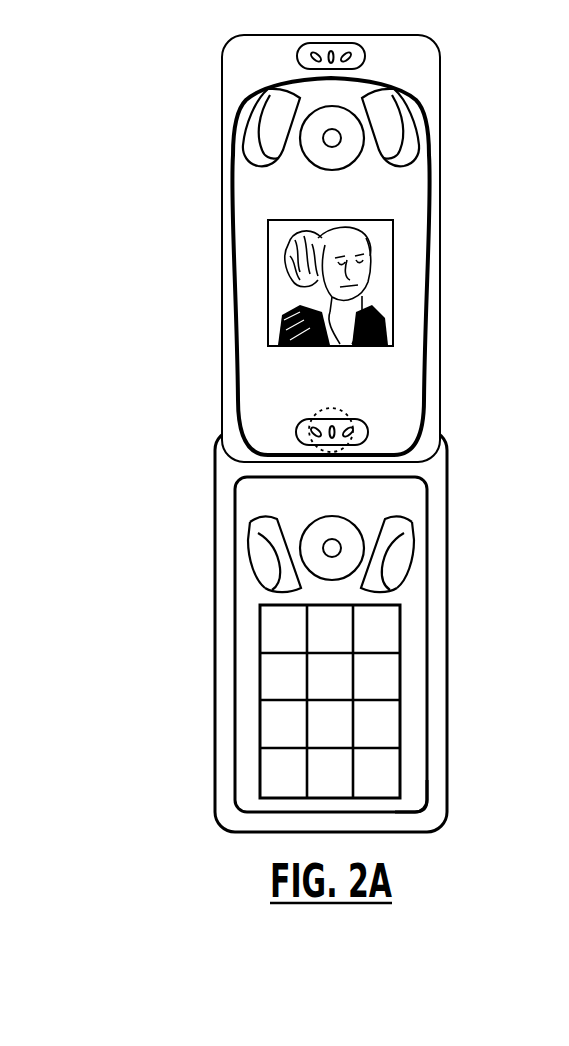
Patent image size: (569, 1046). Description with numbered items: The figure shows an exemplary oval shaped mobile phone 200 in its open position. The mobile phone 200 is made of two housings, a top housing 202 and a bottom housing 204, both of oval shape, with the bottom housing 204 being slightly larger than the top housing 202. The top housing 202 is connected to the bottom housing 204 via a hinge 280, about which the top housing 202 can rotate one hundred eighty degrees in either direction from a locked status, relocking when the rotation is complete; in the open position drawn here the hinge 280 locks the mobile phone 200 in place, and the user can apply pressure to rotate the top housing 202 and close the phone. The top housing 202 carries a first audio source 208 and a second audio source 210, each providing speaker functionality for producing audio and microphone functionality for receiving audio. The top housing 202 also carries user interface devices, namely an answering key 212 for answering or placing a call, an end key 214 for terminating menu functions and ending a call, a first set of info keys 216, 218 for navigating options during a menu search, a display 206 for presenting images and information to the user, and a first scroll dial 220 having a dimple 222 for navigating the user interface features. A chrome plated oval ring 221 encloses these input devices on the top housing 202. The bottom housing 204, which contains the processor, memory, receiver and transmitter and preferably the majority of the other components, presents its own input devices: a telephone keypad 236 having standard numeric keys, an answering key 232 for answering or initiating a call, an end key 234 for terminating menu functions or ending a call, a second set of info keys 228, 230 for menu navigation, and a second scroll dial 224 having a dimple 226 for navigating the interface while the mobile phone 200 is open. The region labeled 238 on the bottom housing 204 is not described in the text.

The mobile phone 200 is at (114, 411).
The top housing 202 is at (440, 317).
The bottom housing 204 is at (447, 785).
The display 206 is at (278, 250).
The first audio source 208 is at (368, 430).
The second audio source 210 is at (330, 43).
The answering key 212 is at (383, 112).
The end key 214 is at (273, 113).
The info key 216 is at (260, 150).
The info key 218 is at (406, 148).
The first scroll dial 220 is at (323, 172).
The chrome plated oval ring 221 is at (422, 380).
The dimple 222 is at (340, 139).
The second scroll dial 224 is at (335, 515).
The dimple 226 is at (327, 513).
The info key 228 is at (260, 537).
The info key 230 is at (399, 545).
The answering key 232 is at (392, 580).
The end key 234 is at (275, 573).
The telephone keypad 236 is at (235, 713).
The bezel corner 238 is at (433, 813).
The hinge 280 is at (326, 406).